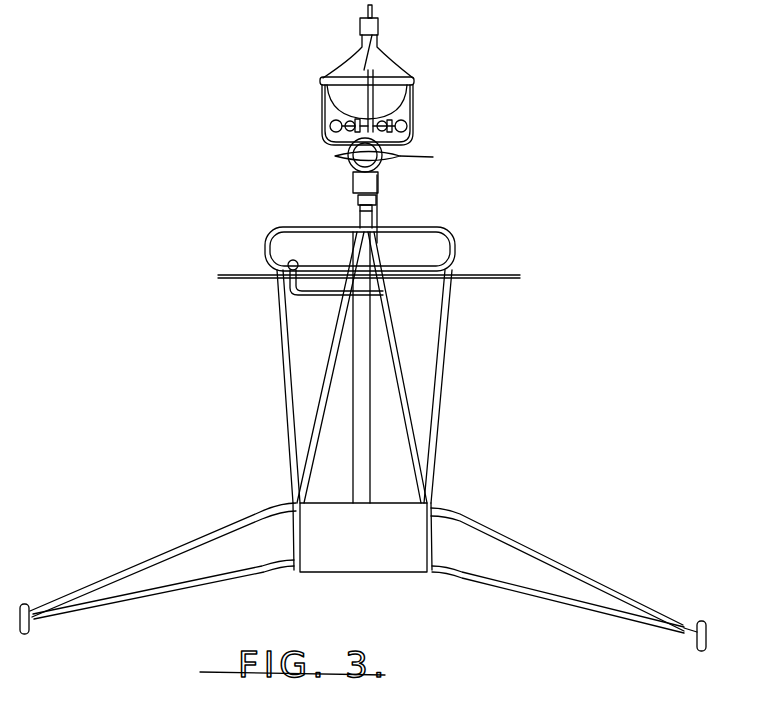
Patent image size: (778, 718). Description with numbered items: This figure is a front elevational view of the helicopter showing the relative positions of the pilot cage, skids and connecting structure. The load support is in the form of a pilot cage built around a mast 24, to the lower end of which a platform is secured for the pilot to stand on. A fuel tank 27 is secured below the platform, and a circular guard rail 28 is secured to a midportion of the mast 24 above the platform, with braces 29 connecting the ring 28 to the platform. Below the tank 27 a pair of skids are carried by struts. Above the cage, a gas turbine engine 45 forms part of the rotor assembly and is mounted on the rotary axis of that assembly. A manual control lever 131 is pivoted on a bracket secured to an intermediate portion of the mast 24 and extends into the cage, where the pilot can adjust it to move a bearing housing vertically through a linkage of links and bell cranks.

The gas turbine engine 45 is at (425, 85).
The circular guard rail 28 is at (432, 213).
The braces 29 is at (332, 337).
The manual control lever 131 is at (300, 300).
The mast 24 is at (353, 470).
The fuel tank 27 is at (378, 543).